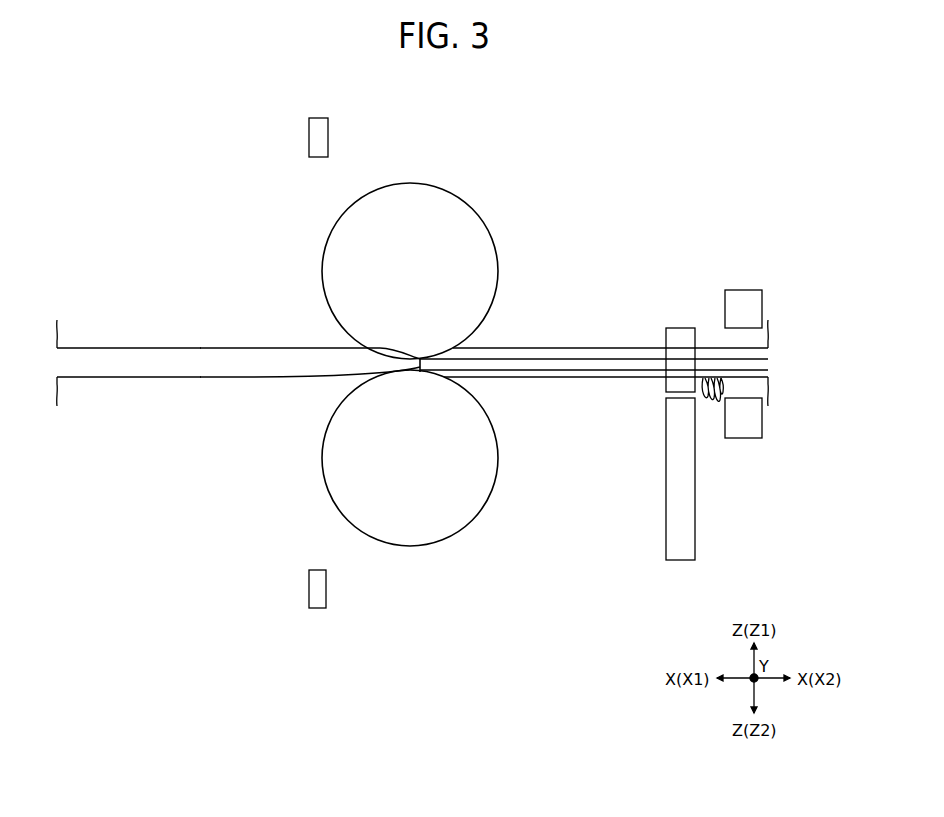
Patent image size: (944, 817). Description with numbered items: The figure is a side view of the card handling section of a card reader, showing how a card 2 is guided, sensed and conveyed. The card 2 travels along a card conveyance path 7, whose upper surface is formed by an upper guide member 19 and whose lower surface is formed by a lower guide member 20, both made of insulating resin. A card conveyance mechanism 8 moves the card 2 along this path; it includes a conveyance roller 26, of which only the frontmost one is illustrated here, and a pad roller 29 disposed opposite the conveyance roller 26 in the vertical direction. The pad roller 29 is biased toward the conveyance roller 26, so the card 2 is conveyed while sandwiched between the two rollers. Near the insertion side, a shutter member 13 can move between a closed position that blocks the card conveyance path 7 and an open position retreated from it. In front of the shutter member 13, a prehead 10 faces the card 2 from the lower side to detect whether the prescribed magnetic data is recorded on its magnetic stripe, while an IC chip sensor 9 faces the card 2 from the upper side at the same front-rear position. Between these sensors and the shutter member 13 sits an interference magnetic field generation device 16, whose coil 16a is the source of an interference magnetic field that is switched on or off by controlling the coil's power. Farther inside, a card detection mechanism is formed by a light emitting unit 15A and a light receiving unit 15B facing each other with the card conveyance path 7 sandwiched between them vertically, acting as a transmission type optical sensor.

The card 2 is at (585, 348).
The card conveyance path 7 is at (203, 362).
The card conveyance mechanism 8 is at (403, 335).
The IC chip sensor 9 is at (740, 290).
The prehead 10 is at (743, 438).
The shutter member 13 is at (681, 328).
The light emitting unit 15A is at (328, 130).
The light receiving unit 15B is at (326, 582).
The interference magnetic field generation device 16 is at (753, 458).
The coil 16a is at (712, 402).
The upper guide member 19 is at (103, 347).
The lower guide member 20 is at (128, 378).
The conveyance roller 26 is at (322, 272).
The pad roller 29 is at (322, 463).